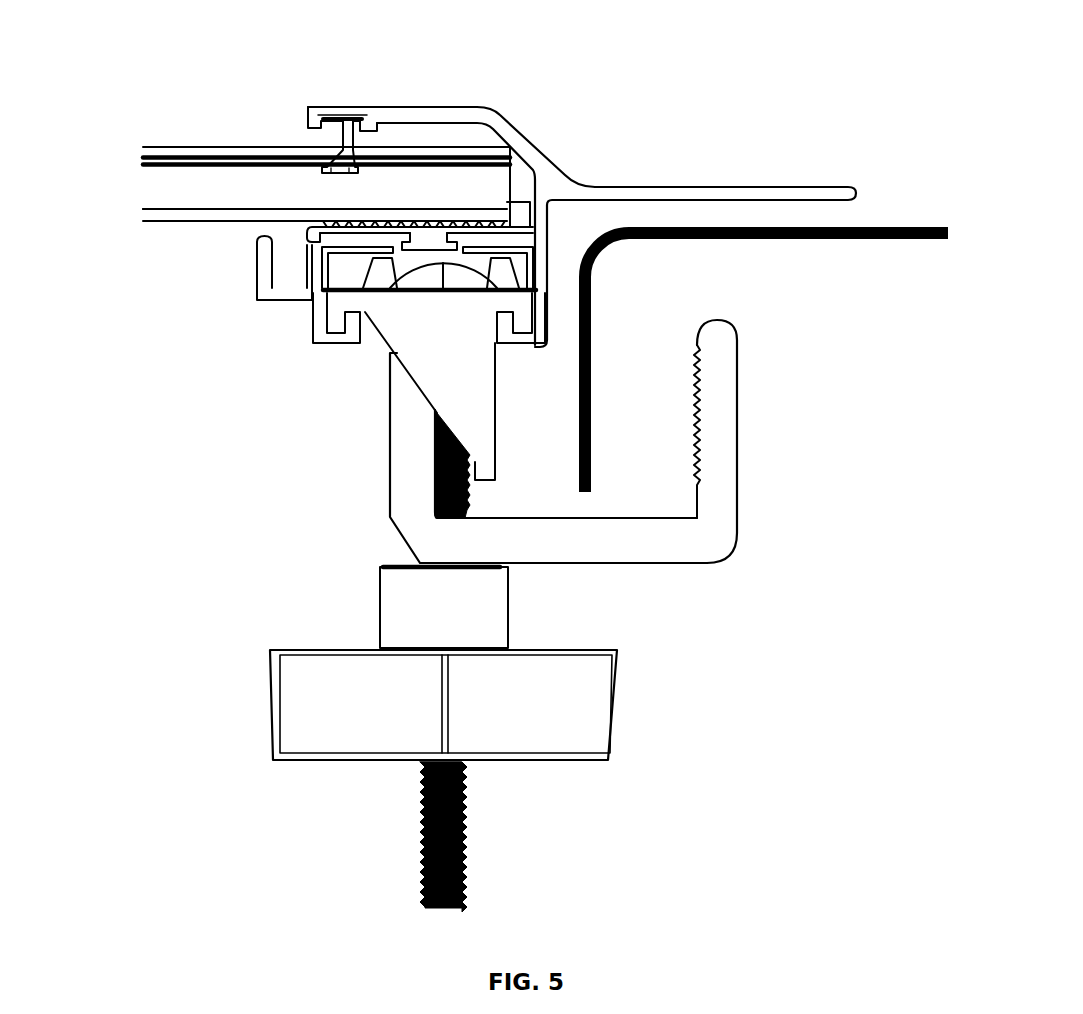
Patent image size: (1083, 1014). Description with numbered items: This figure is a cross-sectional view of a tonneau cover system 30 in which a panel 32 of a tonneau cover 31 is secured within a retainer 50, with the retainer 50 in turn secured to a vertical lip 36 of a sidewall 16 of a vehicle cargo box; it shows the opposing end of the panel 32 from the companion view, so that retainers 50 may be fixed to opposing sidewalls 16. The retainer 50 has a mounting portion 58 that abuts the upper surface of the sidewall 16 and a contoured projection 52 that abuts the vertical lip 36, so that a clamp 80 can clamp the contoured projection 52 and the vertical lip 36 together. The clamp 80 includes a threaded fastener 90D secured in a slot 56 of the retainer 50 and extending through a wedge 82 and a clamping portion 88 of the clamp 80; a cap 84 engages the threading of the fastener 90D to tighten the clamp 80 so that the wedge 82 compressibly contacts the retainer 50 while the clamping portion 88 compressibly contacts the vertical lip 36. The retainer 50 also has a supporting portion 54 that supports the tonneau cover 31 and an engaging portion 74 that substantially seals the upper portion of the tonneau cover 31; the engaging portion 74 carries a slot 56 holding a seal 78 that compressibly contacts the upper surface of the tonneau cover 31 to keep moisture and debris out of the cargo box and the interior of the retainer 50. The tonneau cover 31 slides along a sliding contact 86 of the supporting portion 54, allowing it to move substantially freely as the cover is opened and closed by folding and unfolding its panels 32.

The tonneau cover system 30 is at (911, 83).
The tonneau cover 31 is at (133, 137).
The panel 32 is at (185, 188).
The seal 78 is at (333, 140).
The slot 56 is at (379, 108).
The engaging portion 74 is at (445, 108).
The retainer 50 is at (596, 156).
The mounting portion 58 is at (756, 192).
The sidewall 16 is at (920, 258).
The sliding contact 86 is at (427, 232).
The supporting portion 54 is at (343, 240).
The threaded fastener 90D is at (455, 280).
The contoured projection 52 is at (540, 278).
The vertical lip 36 is at (592, 367).
The wedge 82 is at (435, 352).
The clamp 80 is at (765, 576).
The clamping portion 88 is at (720, 502).
The cap 84 is at (590, 713).